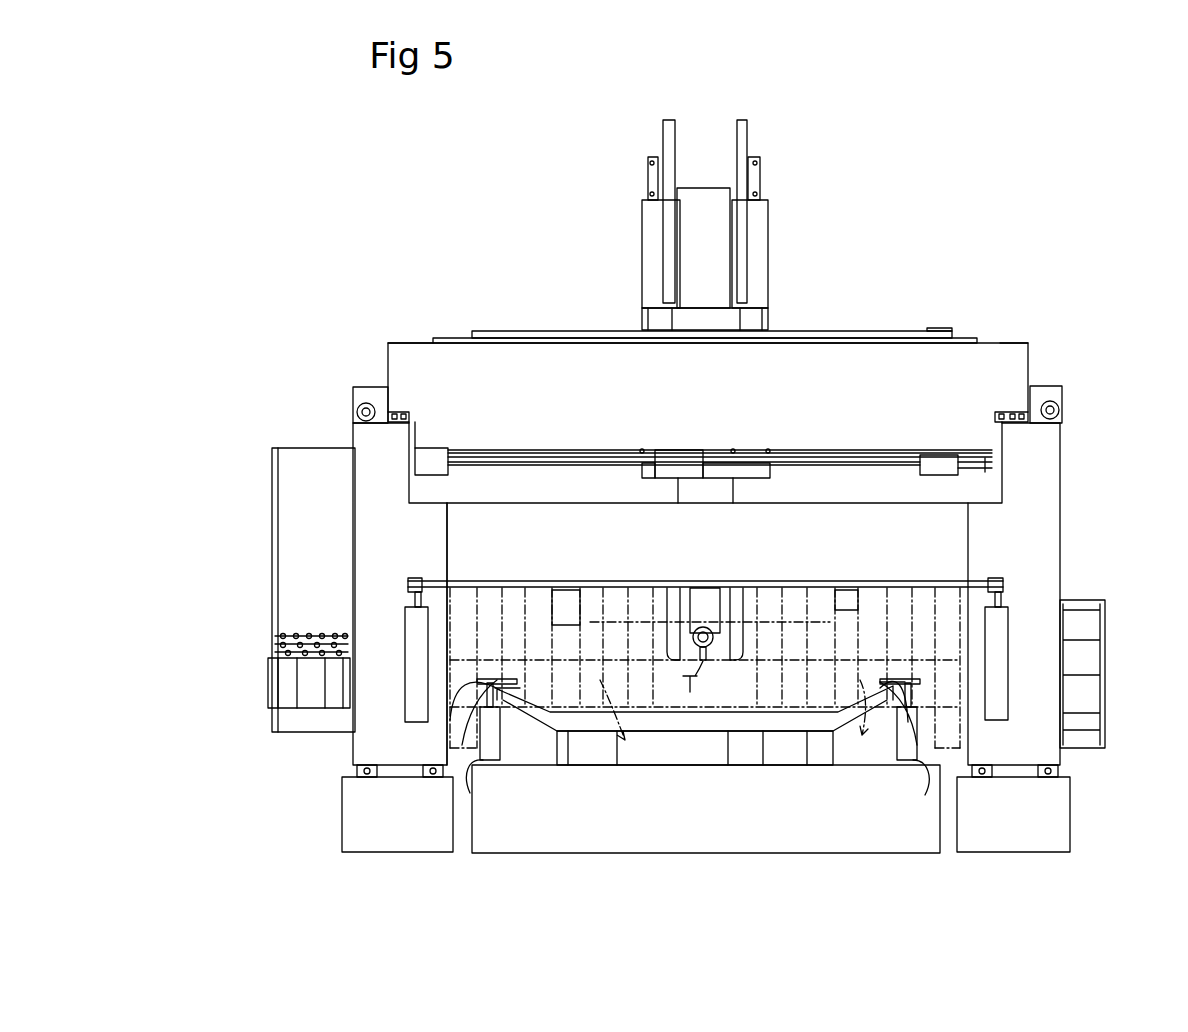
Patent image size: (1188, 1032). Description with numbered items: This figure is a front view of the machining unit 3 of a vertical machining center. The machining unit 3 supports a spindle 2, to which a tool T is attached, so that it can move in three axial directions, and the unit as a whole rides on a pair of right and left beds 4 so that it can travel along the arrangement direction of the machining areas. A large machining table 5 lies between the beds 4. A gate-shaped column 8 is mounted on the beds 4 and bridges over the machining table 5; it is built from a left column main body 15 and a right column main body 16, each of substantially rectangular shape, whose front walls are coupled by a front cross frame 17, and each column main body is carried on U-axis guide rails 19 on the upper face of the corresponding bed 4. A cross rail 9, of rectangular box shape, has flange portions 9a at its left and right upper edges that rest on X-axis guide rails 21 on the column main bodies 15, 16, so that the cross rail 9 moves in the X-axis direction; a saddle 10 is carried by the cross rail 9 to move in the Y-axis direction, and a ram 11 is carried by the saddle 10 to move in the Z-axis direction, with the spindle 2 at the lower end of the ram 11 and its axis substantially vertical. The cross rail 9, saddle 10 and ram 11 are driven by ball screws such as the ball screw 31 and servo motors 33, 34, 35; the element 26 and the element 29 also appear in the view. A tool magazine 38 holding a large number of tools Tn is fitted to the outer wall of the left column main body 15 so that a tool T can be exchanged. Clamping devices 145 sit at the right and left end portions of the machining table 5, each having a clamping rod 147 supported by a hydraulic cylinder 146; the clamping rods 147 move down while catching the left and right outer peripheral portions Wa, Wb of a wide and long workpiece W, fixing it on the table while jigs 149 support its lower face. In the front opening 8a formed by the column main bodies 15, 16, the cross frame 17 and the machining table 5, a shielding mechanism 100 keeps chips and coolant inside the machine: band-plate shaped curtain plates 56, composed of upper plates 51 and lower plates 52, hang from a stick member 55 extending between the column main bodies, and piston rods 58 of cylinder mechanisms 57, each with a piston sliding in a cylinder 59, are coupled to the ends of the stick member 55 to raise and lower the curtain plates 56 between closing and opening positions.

The spindle 2 is at (707, 577).
The machining unit 3 is at (910, 299).
The bed 4 is at (338, 833).
The machining table 5 is at (678, 863).
The gate-shaped column 8 is at (989, 313).
The front opening 8a is at (453, 630).
The cross rail 9 is at (434, 332).
The flange portion 9a is at (388, 343).
The saddle 10 is at (778, 310).
The ram 11 is at (709, 178).
The left column main body 15 is at (347, 517).
The right column main body 16 is at (1066, 462).
The front cross frame 17 is at (729, 452).
The U-axis guide rail 19 is at (368, 777).
The X-axis guide rail 21 is at (418, 413).
The guide plate 26 is at (568, 330).
The guide rod 29 is at (668, 157).
The ball screw 31 is at (548, 474).
The servo motor 33 is at (355, 404).
The servo motor 34 is at (975, 473).
The servo motor 35 is at (648, 178).
The tool magazine 38 is at (271, 621).
The upper plate 51 is at (603, 592).
The lower plate 52 is at (640, 690).
The stick member 55 is at (709, 550).
The curtain plate 56 is at (432, 585).
The cylinder mechanism 57 is at (707, 678).
The piston rod 58 is at (412, 598).
The cylinder 59 is at (404, 658).
The shielding mechanism 100 is at (894, 572).
The clamping device 145 is at (505, 756).
The hydraulic cylinder 146 is at (470, 793).
The clamping rod 147 is at (460, 725).
The jig 149 is at (615, 755).
The tool T is at (693, 676).
The tools Tn is at (290, 727).
The wide and long workpiece W is at (700, 791).
The left outer peripheral portion Wa is at (535, 715).
The right outer peripheral portion Wb is at (880, 700).